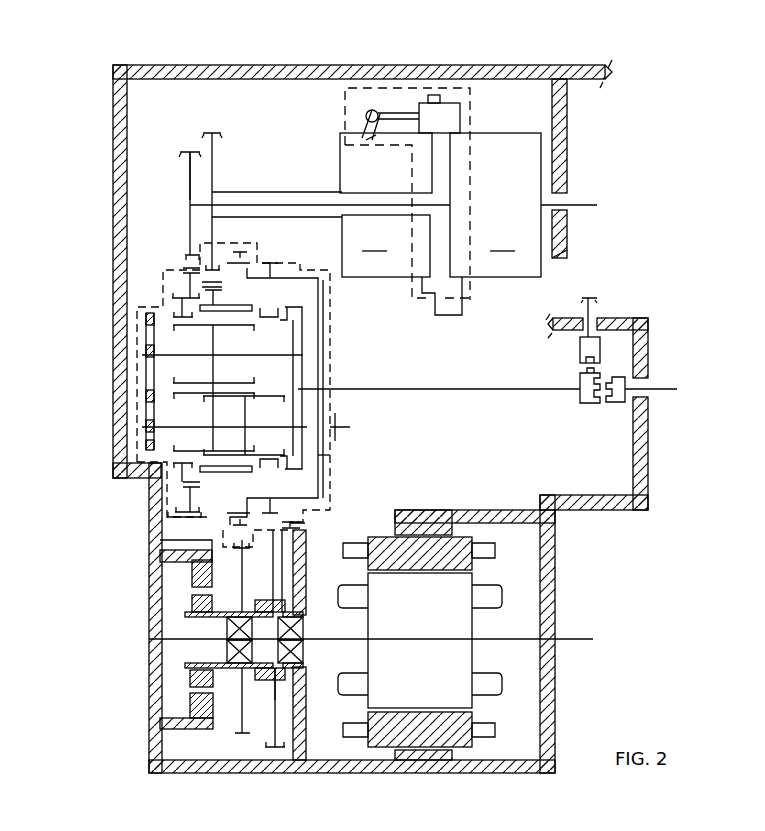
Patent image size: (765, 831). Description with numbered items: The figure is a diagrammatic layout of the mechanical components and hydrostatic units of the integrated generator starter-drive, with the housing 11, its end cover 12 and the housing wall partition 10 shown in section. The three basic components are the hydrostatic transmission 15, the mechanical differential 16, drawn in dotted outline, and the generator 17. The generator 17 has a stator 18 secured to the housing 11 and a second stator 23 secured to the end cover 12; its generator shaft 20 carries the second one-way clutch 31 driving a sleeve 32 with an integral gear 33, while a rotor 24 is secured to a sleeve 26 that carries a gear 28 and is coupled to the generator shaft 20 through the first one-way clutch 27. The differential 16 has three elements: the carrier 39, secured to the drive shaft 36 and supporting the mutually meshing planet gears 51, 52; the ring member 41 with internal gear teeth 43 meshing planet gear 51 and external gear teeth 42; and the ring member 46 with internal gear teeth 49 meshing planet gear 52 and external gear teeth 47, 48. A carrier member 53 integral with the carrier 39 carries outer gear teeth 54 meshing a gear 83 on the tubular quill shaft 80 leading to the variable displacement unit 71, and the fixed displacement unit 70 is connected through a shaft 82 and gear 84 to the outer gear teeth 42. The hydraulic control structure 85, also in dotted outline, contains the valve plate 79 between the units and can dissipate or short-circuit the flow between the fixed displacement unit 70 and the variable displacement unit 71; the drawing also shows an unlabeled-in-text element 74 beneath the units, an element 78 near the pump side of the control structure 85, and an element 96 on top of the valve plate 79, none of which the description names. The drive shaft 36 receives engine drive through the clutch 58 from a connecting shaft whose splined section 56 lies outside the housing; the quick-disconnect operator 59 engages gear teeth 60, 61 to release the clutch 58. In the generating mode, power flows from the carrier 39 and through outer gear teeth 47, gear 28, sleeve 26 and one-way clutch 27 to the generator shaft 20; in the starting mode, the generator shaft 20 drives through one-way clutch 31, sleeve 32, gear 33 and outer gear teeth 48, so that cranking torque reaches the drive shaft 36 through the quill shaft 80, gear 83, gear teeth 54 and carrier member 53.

The housing wall partition 10 is at (300, 695).
The housing 11 is at (168, 65).
The end cover 12 is at (113, 76).
The hydrostatic transmission 15 is at (562, 98).
The differential 16 is at (340, 482).
The generator 17 is at (358, 745).
The stator 18 is at (462, 742).
The generator shaft 20 is at (530, 640).
The second stator 23 is at (183, 722).
The rotor 24 is at (190, 698).
The sleeve 26 is at (192, 672).
The first one-way clutch 27 is at (192, 648).
The gear 28 is at (239, 713).
The second one-way clutch 31 is at (302, 652).
The sleeve 32 is at (345, 621).
The gear 33 is at (192, 572).
The drive shaft 36 is at (503, 391).
The carrier 39 is at (304, 382).
The ring member 41 is at (173, 297).
The outer gear teeth 42 is at (184, 268).
The inner gear teeth 43 is at (182, 324).
The ring member 46 is at (340, 430).
The outer gear teeth 47 is at (238, 547).
The outer gear teeth 48 is at (292, 524).
The inner gear teeth 49 is at (318, 456).
The planet gear 51 is at (150, 356).
The planet gear 52 is at (190, 480).
The carrier member 53 is at (300, 300).
The outer gear teeth 54 is at (255, 290).
The splined section 56 is at (660, 388).
The clutch 58 is at (610, 403).
The quick-disconnect operator 59 is at (600, 336).
The gear teeth 60 is at (600, 360).
The gear teeth 61 is at (584, 376).
The fixed displacement unit 70 is at (496, 205).
The variable displacement unit 71 is at (386, 246).
The connector 74 is at (462, 310).
The pump lever 78 is at (356, 108).
The valve plate 79 is at (468, 108).
The tubular quill shaft 80 is at (276, 192).
The shaft 82 is at (224, 205).
The gear 83 is at (205, 135).
The gear 84 is at (185, 158).
The hydraulic control structure 85 is at (345, 100).
The valve knob 96 is at (440, 95).